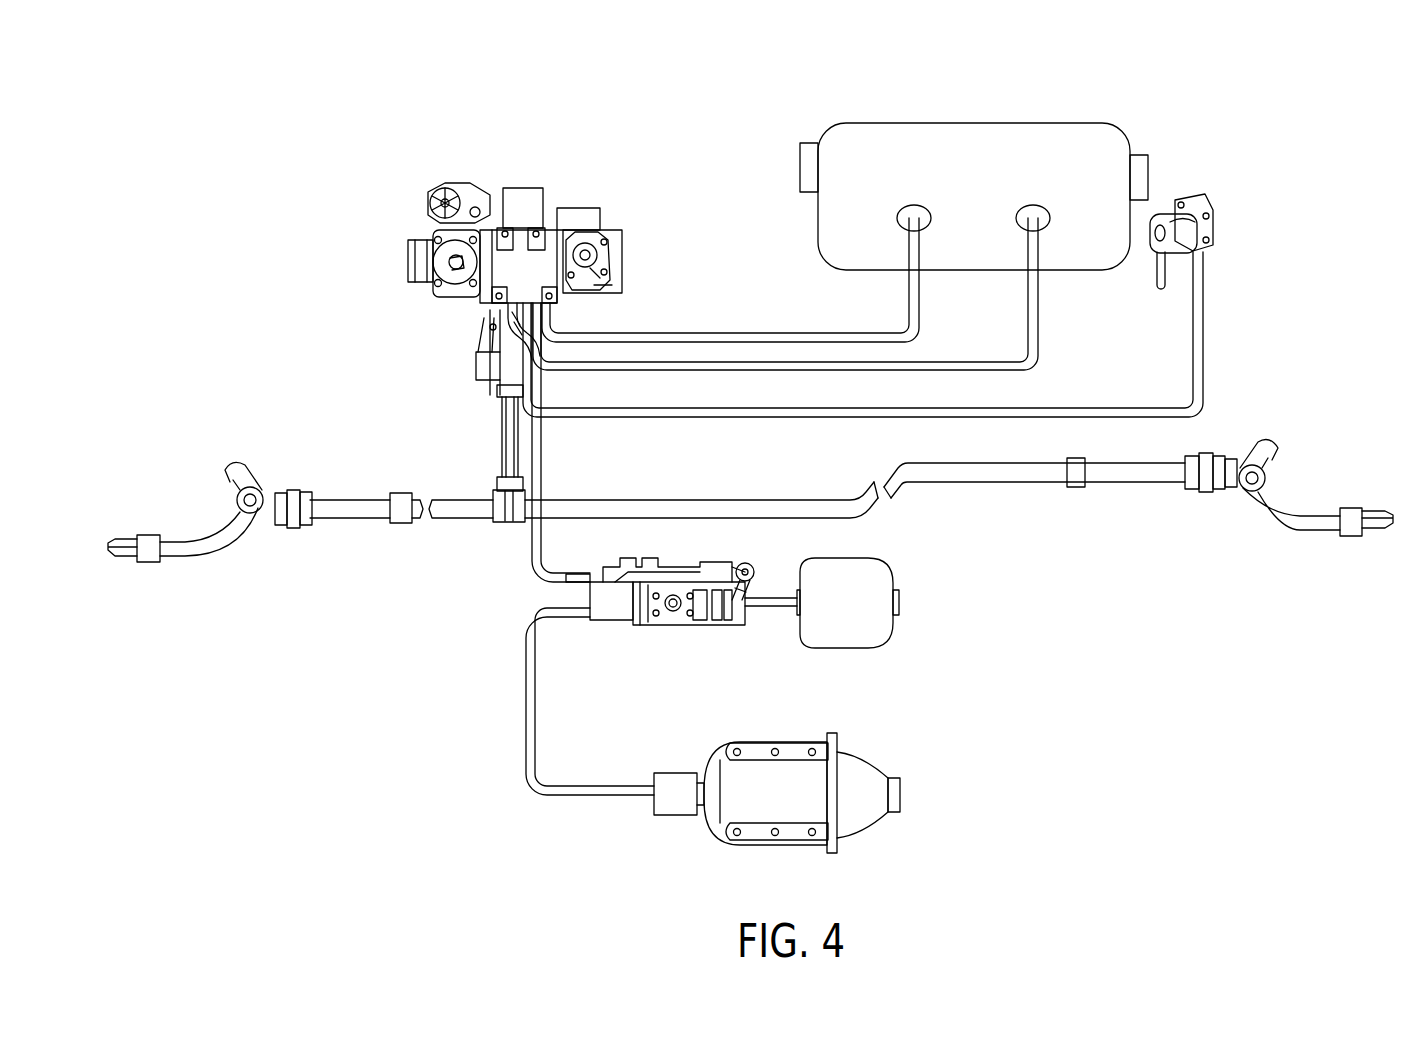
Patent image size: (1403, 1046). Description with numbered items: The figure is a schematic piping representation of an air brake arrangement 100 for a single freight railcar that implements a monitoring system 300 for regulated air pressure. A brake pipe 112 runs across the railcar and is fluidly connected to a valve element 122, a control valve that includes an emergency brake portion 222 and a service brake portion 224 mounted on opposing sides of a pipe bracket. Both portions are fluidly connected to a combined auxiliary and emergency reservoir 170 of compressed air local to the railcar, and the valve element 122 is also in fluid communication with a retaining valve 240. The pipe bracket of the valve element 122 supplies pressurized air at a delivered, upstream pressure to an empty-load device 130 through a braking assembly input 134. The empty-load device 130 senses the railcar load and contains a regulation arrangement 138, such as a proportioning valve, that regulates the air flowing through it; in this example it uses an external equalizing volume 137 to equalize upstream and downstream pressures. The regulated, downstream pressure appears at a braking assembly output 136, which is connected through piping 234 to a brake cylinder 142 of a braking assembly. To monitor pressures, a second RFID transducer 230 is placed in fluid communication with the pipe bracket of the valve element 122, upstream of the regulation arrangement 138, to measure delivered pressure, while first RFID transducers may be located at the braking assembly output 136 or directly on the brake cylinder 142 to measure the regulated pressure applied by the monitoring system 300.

The air brake arrangement 100 is at (1266, 118).
The brake pipe 112 is at (988, 480).
The valve element 122 is at (628, 146).
The empty-load device 130 is at (733, 630).
The braking assembly input 134 is at (625, 578).
The braking assembly output 136 is at (580, 628).
The equalizing volume 137 is at (896, 626).
The regulation arrangement 138 is at (640, 628).
The brake cylinder 142 is at (808, 745).
The combined auxiliary and emergency reservoir 170 is at (911, 123).
The emergency brake portion 222 is at (433, 232).
The service brake portion 224 is at (598, 236).
The second RFID transducer 230 is at (523, 200).
The piping 234 is at (526, 745).
The retaining valve 240 is at (1196, 205).
The monitoring system 300 is at (408, 648).